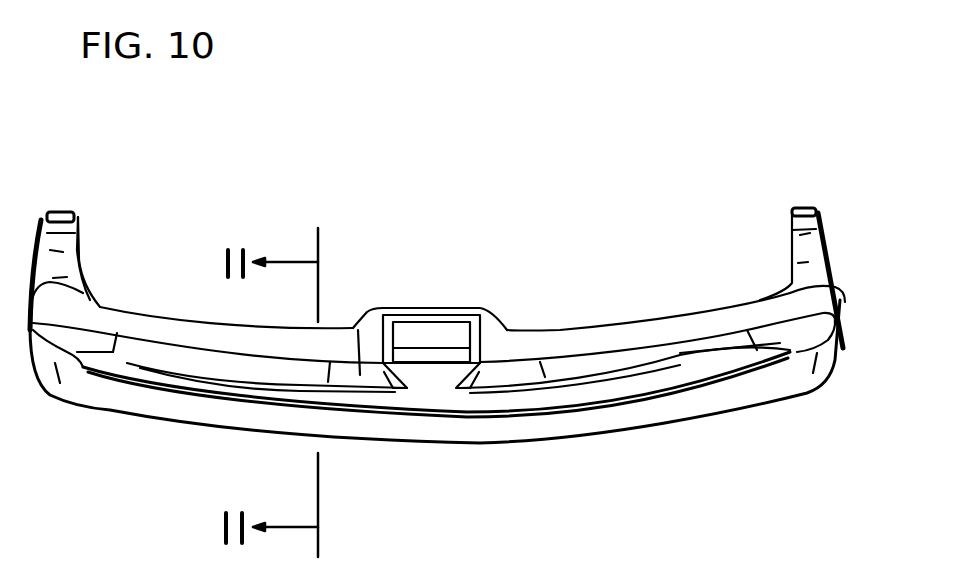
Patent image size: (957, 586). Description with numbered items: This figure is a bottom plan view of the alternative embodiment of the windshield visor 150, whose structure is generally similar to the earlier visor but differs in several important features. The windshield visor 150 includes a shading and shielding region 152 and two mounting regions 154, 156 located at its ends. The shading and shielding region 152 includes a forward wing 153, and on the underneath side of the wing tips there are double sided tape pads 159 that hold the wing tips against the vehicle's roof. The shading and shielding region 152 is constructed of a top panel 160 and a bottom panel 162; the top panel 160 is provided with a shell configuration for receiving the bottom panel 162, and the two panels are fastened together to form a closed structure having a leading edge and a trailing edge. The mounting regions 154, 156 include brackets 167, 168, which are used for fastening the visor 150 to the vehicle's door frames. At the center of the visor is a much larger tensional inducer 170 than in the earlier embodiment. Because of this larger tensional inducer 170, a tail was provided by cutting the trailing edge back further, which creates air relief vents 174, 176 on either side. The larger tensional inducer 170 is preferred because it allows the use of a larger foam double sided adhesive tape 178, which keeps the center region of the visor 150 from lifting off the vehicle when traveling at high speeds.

The windshield visor 150 is at (582, 204).
The shading and shielding region 152 is at (704, 293).
The forward wing 153 is at (602, 420).
The mounting region 154 is at (98, 237).
The mounting region 156 is at (748, 224).
The double sided tape pad 159 is at (75, 213).
The top panel 160 is at (427, 430).
The bottom panel 162 is at (358, 330).
The bracket 167 is at (33, 240).
The bracket 168 is at (833, 232).
The tensional inducer 170 is at (455, 340).
The air relief vent 174 is at (345, 305).
The air relief vent 176 is at (640, 293).
The foam double sided adhesive tape 178 is at (427, 333).